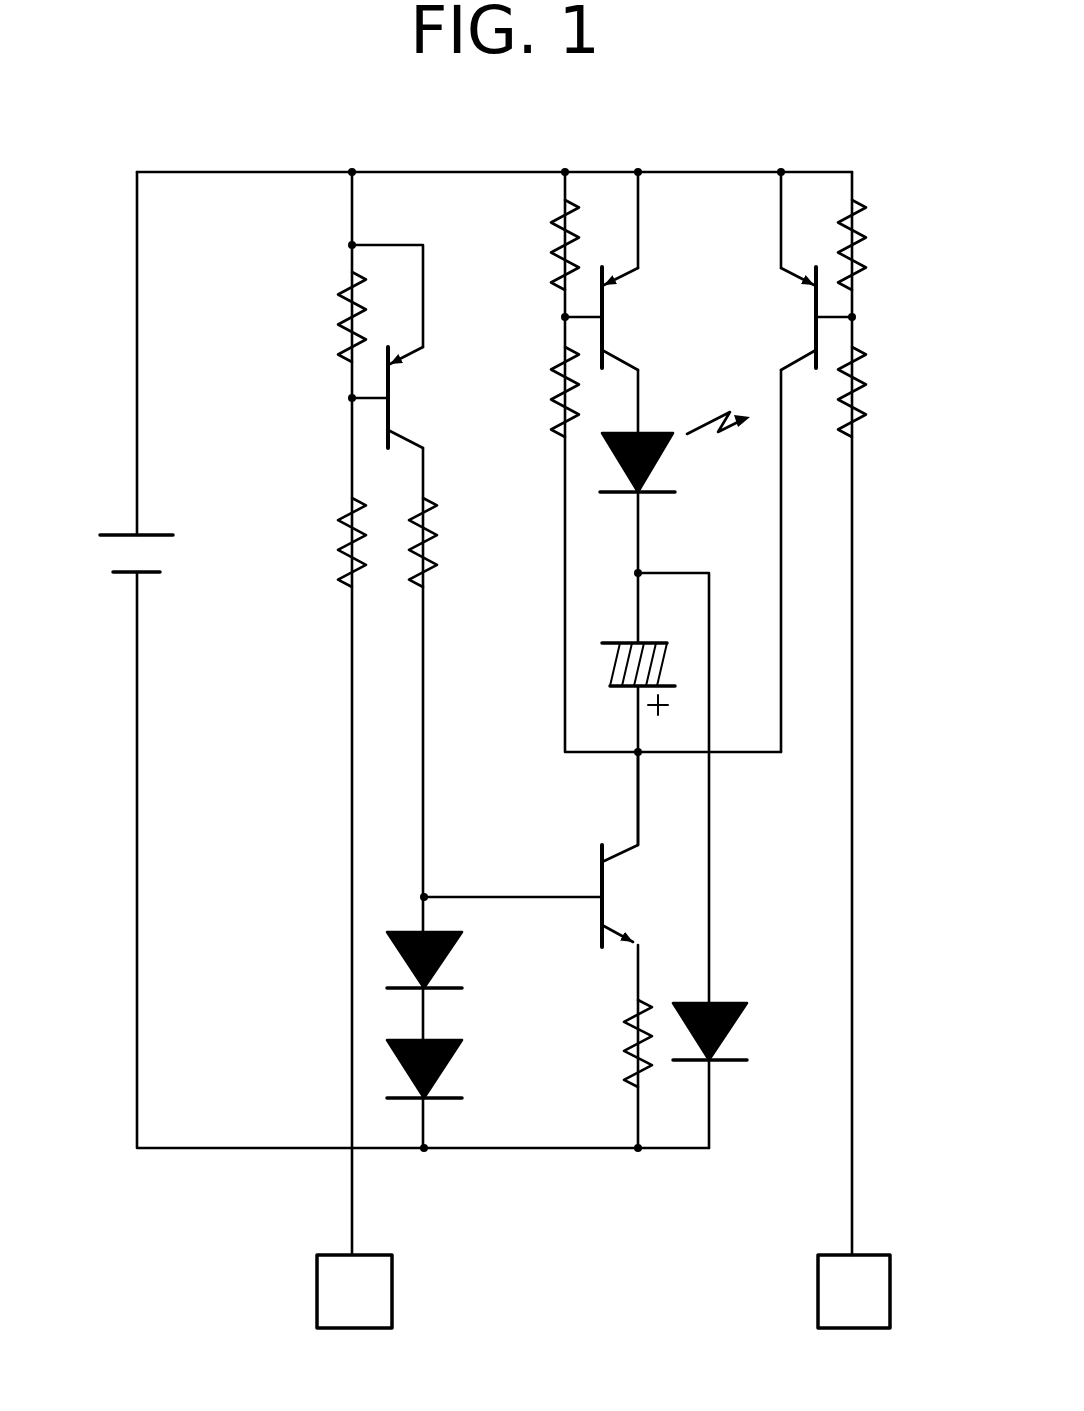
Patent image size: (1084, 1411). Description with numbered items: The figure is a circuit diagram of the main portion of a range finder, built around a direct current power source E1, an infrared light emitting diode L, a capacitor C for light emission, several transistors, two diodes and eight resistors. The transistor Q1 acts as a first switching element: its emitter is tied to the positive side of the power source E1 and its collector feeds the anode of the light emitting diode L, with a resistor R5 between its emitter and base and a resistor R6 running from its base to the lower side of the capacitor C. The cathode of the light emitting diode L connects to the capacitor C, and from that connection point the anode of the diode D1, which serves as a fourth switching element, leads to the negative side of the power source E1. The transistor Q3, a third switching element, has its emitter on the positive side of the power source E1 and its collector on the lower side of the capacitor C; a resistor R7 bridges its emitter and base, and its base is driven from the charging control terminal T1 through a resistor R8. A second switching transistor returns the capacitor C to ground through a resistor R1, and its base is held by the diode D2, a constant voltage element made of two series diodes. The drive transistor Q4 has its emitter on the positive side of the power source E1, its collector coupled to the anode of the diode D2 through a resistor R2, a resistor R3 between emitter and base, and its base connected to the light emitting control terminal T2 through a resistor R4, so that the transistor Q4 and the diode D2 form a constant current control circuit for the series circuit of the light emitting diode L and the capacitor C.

The direct current power source E1 is at (128, 533).
The resistor R1 is at (615, 1043).
The resistor R2 is at (447, 542).
The resistor R3 is at (329, 317).
The resistor R4 is at (331, 542).
The resistor R5 is at (542, 245).
The resistor R6 is at (542, 392).
The resistor R7 is at (874, 245).
The resistor R8 is at (874, 392).
The transistor Q1 is at (631, 318).
The transistor Q3 is at (787, 318).
The transistor Q4 is at (400, 397).
The diode D1 is at (759, 1014).
The diode D2 is at (544, 925).
The light emitting diode L is at (675, 452).
The capacitor for light emission C is at (650, 679).
The charging control terminal T1 is at (854, 1291).
The light emitting control terminal T2 is at (354, 1291).